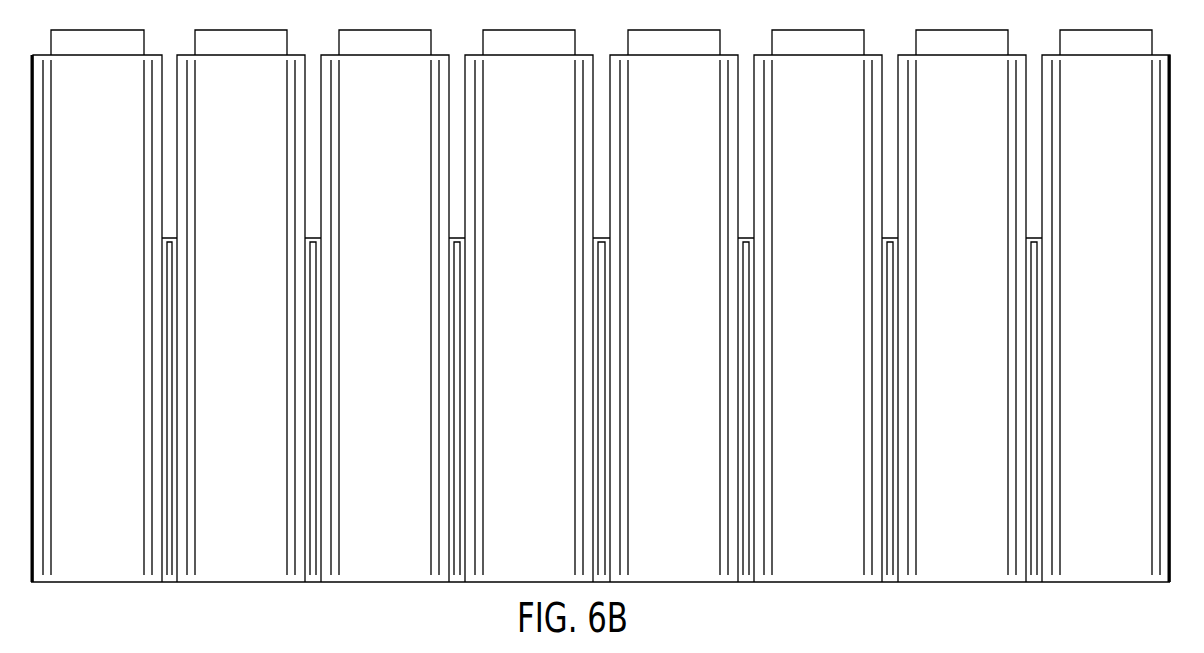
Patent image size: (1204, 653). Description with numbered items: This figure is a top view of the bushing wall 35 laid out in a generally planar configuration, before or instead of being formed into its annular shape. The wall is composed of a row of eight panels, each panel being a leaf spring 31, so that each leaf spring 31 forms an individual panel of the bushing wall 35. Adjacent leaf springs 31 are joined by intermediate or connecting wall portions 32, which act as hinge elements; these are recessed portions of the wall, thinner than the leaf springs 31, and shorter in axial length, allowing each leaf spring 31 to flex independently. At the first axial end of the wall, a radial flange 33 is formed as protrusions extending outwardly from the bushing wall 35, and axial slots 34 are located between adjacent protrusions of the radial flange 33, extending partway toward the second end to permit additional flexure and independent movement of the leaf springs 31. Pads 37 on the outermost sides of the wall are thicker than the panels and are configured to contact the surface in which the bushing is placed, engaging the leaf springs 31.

The leaf spring 31 is at (1114, 337).
The intermediate or connecting wall portion 32 is at (608, 312).
The radial flange 33 is at (90, 42).
The axial slot 34 is at (602, 128).
The bushing wall 35 is at (968, 584).
The pad 37 is at (45, 66).